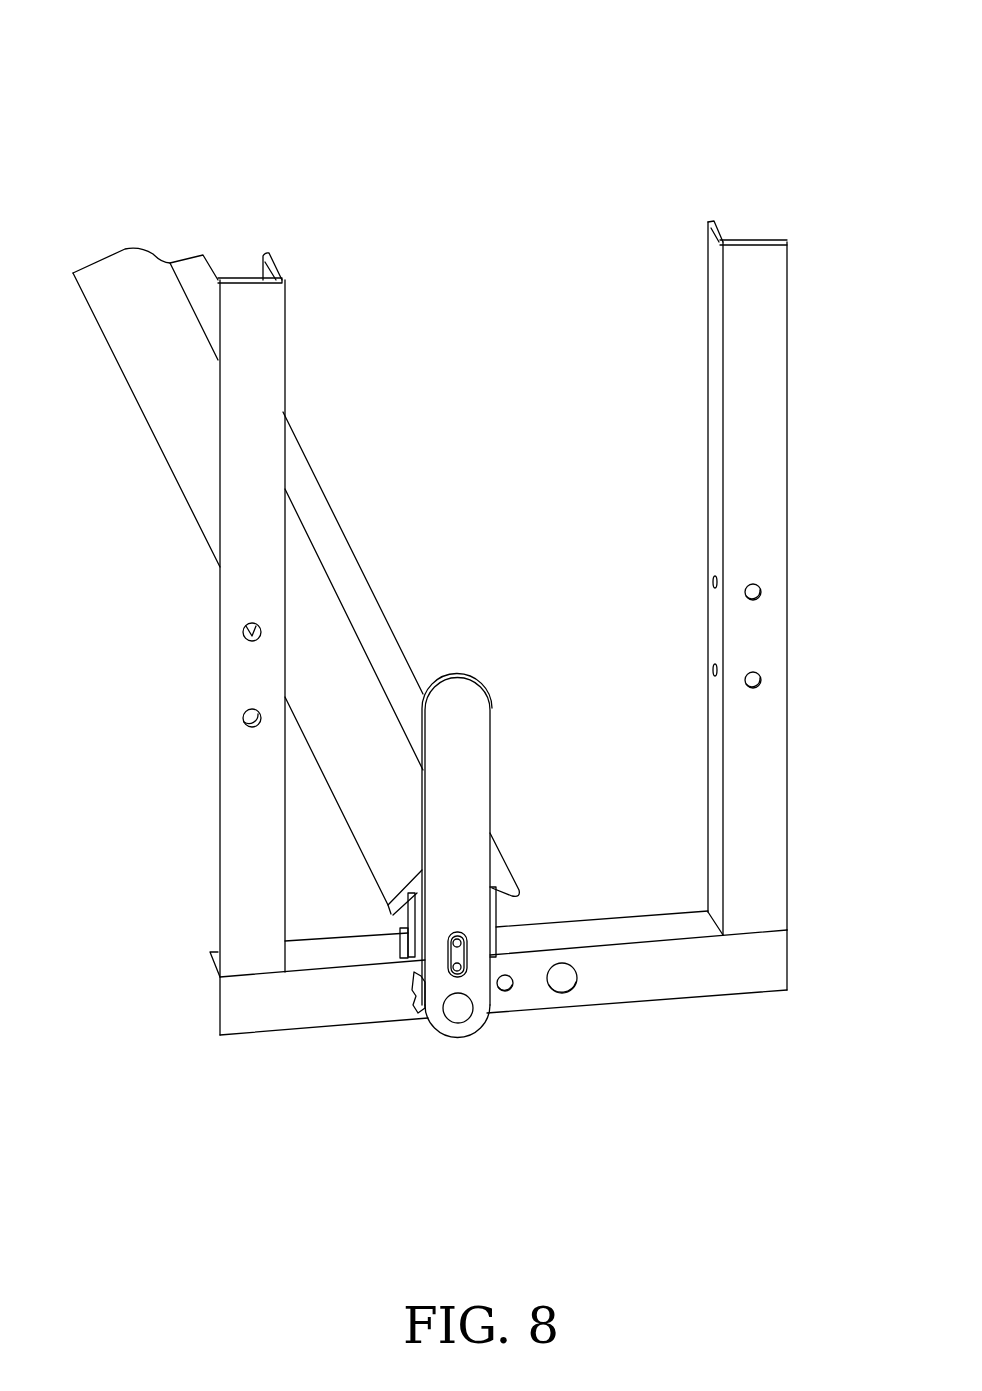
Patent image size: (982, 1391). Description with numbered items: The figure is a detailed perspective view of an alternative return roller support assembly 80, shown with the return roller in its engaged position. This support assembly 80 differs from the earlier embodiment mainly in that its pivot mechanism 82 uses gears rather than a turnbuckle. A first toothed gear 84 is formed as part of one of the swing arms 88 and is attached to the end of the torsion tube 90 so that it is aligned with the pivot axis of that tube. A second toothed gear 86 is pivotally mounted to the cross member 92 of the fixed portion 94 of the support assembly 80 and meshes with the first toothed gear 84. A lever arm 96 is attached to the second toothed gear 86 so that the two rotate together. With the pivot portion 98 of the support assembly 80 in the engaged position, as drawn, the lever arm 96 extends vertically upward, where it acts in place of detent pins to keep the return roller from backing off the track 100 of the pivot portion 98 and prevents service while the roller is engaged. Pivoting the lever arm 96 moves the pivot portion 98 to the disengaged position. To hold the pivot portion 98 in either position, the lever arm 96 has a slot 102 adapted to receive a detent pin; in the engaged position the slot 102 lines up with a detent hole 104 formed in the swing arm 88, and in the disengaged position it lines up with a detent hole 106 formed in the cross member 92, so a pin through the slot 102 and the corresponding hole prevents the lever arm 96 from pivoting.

The support assembly 80 is at (437, 99).
The pivot mechanism 82 is at (441, 1040).
The first toothed gear 84 is at (467, 960).
The second toothed gear 86 is at (420, 990).
The swing arm 88 is at (417, 918).
The torsion tube 90 is at (407, 927).
The cross member 92 is at (692, 922).
The fixed portion 94 is at (745, 745).
The lever arm 96 is at (470, 718).
The pivot portion 98 is at (345, 658).
The track 100 is at (353, 764).
The slot 102 is at (608, 1008).
The detent hole 104 is at (455, 943).
The detent hole 106 is at (507, 992).